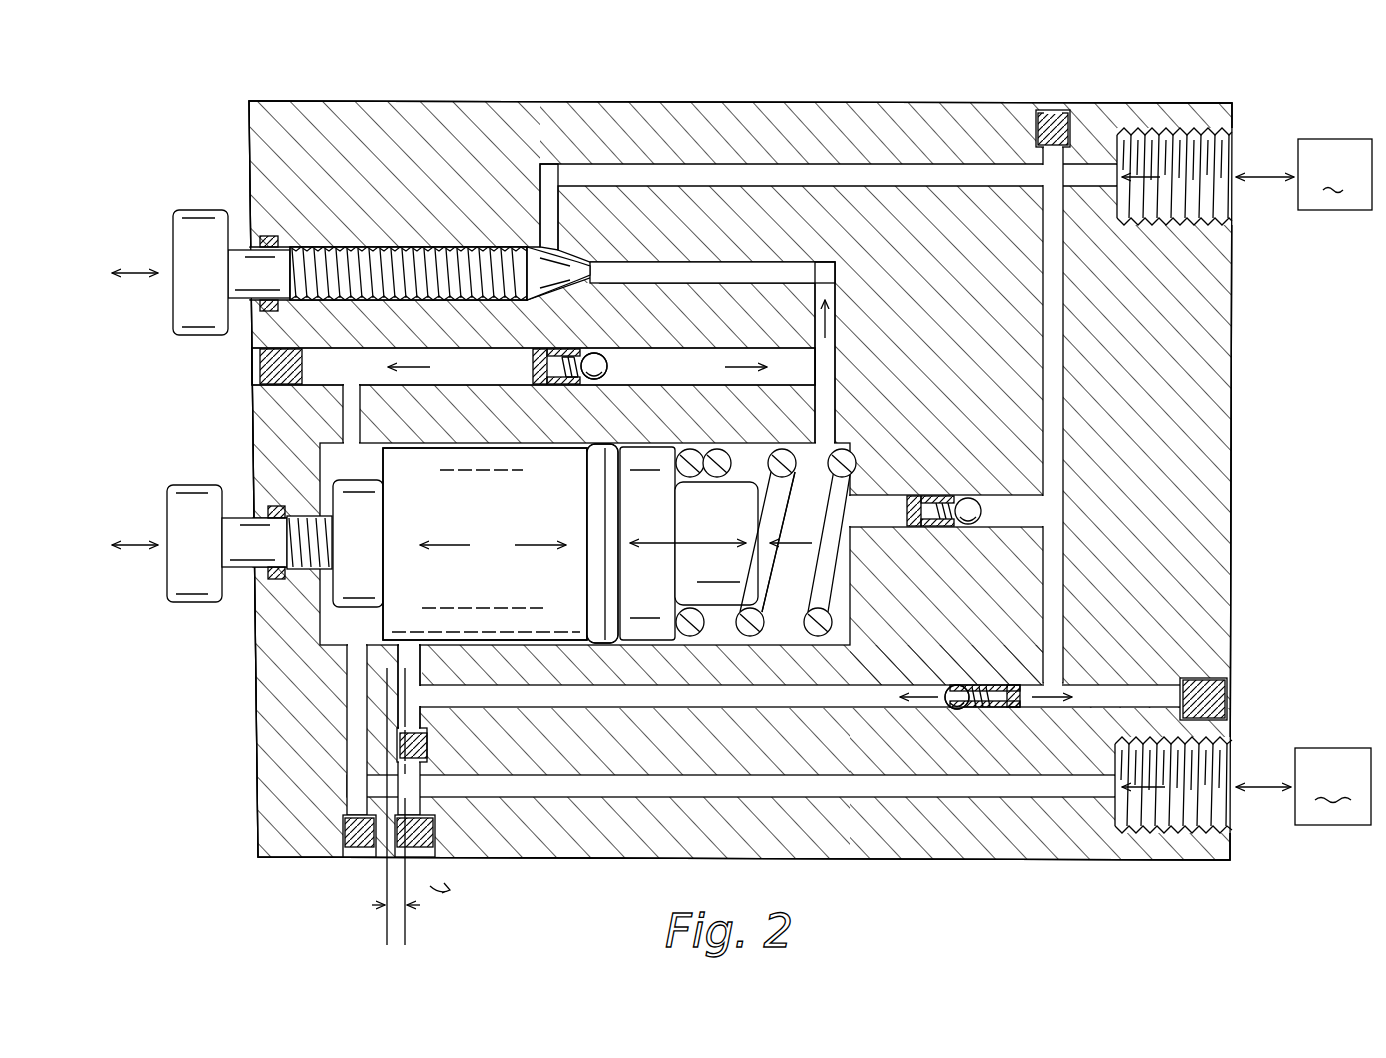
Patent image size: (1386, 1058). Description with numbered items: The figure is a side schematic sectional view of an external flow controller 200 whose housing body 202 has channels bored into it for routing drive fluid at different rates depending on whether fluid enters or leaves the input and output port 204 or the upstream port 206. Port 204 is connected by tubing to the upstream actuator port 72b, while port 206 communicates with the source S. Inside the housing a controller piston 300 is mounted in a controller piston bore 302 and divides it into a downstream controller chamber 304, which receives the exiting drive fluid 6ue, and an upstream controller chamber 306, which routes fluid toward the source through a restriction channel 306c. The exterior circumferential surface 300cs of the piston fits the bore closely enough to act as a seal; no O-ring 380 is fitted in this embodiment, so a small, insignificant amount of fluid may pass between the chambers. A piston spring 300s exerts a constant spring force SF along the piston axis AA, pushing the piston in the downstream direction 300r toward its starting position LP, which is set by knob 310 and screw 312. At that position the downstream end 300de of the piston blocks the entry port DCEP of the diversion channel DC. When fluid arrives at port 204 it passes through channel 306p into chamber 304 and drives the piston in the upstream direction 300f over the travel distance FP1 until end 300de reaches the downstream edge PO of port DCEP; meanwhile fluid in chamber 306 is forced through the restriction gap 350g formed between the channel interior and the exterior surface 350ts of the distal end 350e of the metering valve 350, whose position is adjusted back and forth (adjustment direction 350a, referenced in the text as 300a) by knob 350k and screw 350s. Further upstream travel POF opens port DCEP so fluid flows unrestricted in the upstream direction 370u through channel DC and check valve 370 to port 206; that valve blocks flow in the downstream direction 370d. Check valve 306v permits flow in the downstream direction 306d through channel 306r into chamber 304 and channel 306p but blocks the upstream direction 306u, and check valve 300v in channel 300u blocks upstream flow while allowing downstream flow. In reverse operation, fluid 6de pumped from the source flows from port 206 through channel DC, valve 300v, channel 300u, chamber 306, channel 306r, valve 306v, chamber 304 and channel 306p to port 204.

The external flow controller 200 is at (244, 99).
The housing body 202 is at (385, 102).
The input and output port 204 is at (1222, 812).
The upstream port 206 is at (1232, 148).
The downstream drive fluid 6de is at (1130, 177).
The exiting drive fluid 6ue is at (1165, 830).
The upstream actuator port 72b is at (1303, 786).
The source S is at (1304, 174).
The controller piston 300 is at (558, 512).
The back and forth direction 300a is at (135, 546).
The exterior circumferential surface 300cs is at (420, 455).
The downstream end of piston 300de is at (392, 632).
The downstream direction 300r is at (448, 546).
The upstream direction 300f is at (540, 546).
The piston spring 300s is at (824, 452).
The channel 300u is at (856, 500).
The check valve 300v is at (978, 527).
The controller piston bore 302 is at (622, 652).
The downstream controller chamber 304 is at (330, 465).
The upstream controller chamber 306 is at (840, 440).
The restriction channel 306c is at (755, 173).
The downstream direction 306d is at (380, 352).
The controller channel 306p is at (735, 797).
The channel 306r is at (748, 360).
The upstream direction 306u is at (845, 262).
The check valve 306v is at (698, 364).
The knob 310 is at (190, 602).
The screw 312 is at (305, 562).
The metering valve 350 is at (372, 238).
The regulator adjustment direction 350a is at (135, 274).
The distal end of metering valve 350e is at (575, 268).
The restriction gap 350g is at (590, 350).
The knob 350k is at (205, 210).
The screw 350s is at (338, 250).
The exterior surface of distal end 350ts is at (545, 250).
The check valve 370 is at (958, 714).
The downstream direction 370d is at (955, 715).
The upstream direction 370u is at (1040, 710).
The O-ring 380 is at (600, 466).
The piston axis AA is at (683, 548).
The spring force SF is at (805, 538).
The diversion channel DC is at (1060, 275).
The entry port of diversion channel DCEP is at (405, 660).
The starting position LP is at (372, 870).
The downstream edge of port PO is at (406, 940).
The travel distance FP1 is at (398, 906).
The further upstream travel POF is at (463, 888).